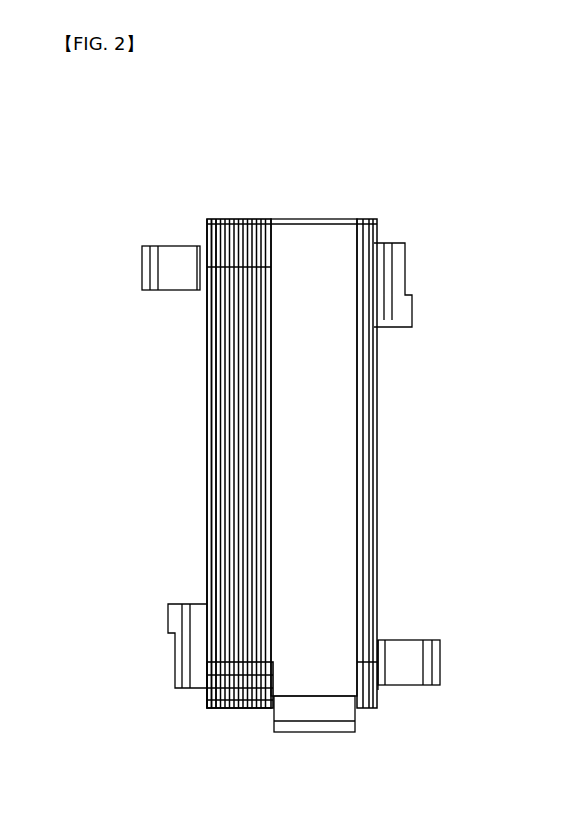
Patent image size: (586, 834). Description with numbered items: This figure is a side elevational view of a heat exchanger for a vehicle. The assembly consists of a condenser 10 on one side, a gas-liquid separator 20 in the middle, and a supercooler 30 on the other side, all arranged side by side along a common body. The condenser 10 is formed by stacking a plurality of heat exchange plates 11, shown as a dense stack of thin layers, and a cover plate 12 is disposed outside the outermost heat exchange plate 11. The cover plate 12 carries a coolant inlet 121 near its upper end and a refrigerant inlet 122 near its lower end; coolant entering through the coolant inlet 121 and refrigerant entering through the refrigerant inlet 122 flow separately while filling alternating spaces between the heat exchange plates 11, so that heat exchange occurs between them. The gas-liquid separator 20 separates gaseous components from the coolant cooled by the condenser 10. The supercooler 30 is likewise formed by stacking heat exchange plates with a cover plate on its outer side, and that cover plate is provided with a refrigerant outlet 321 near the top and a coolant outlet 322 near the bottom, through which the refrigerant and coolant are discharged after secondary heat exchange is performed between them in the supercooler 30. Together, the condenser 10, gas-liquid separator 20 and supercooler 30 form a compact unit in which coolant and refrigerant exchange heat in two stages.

The condenser 10 is at (232, 214).
The heat exchange plates 11 is at (268, 708).
The cover plate 12 is at (208, 708).
The coolant inlet 121 is at (177, 257).
The refrigerant inlet 122 is at (173, 657).
The gas-liquid separator 20 is at (333, 432).
The supercooler 30 is at (368, 217).
The refrigerant outlet 321 is at (410, 266).
The coolant outlet 322 is at (403, 652).